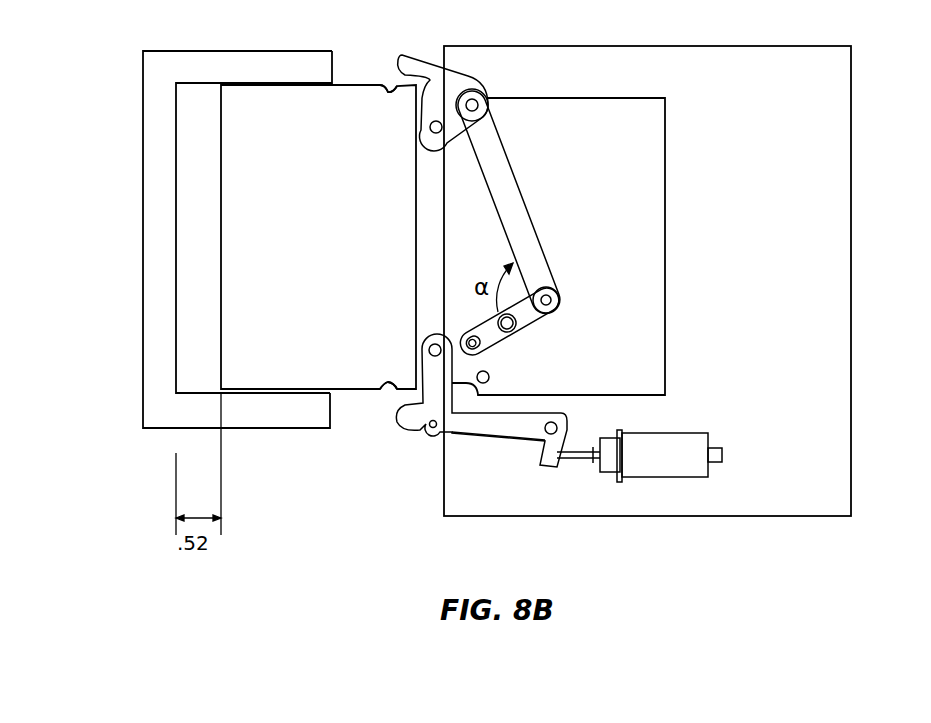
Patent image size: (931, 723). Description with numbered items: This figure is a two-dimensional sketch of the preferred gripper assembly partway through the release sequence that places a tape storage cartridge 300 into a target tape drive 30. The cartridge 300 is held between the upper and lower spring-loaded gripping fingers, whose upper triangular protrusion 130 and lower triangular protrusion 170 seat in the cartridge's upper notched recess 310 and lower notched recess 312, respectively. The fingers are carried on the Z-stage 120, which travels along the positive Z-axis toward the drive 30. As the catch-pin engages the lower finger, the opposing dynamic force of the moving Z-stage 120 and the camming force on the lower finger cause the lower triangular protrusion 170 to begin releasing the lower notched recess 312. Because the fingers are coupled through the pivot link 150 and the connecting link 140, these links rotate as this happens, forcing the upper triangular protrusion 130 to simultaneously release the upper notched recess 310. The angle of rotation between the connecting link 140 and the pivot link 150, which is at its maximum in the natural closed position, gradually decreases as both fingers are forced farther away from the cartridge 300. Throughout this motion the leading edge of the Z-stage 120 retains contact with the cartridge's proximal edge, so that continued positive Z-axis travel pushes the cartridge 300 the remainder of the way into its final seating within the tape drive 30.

The tape drive 30 is at (157, 206).
The tape storage cartridge 300 is at (334, 242).
The upper notched recess 310 is at (392, 88).
The lower notched recess 312 is at (393, 392).
The Z-stage 120 is at (650, 192).
The upper gripping finger's triangular protrusion 130 is at (405, 72).
The connecting link 140 is at (503, 172).
The pivot link 150 is at (530, 313).
The lower gripping finger's triangular protrusion 170 is at (410, 421).